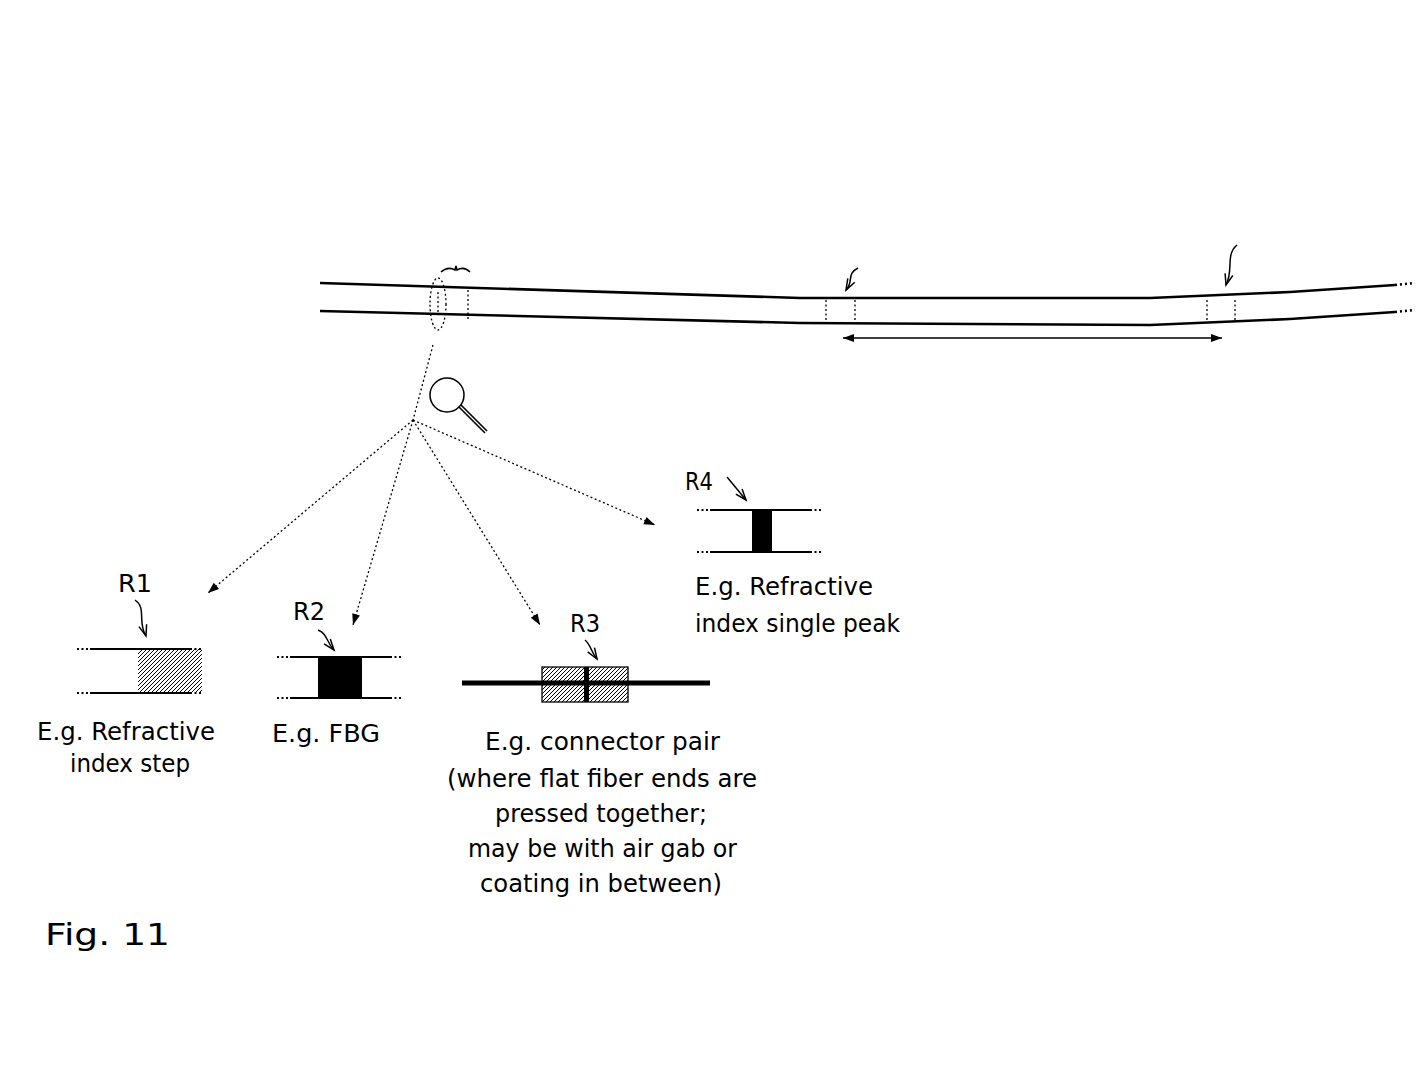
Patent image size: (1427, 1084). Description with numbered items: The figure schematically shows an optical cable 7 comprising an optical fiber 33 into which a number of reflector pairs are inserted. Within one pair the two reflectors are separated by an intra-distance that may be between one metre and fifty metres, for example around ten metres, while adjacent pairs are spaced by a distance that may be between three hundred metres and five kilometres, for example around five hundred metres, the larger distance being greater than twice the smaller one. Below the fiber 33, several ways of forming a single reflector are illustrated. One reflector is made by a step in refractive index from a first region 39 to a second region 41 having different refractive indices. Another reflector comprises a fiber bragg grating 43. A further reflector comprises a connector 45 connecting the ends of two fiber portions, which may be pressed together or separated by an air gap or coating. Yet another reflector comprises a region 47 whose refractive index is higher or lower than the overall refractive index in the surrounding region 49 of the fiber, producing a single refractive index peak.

The optical cable 7 is at (1237, 168).
The optical fiber 33 is at (1298, 290).
The first region 39 is at (107, 672).
The second region 41 is at (170, 671).
The fiber bragg grating 43 is at (352, 657).
The connector 45 is at (620, 667).
The region 47 is at (765, 508).
The region of the fiber 49 is at (805, 532).